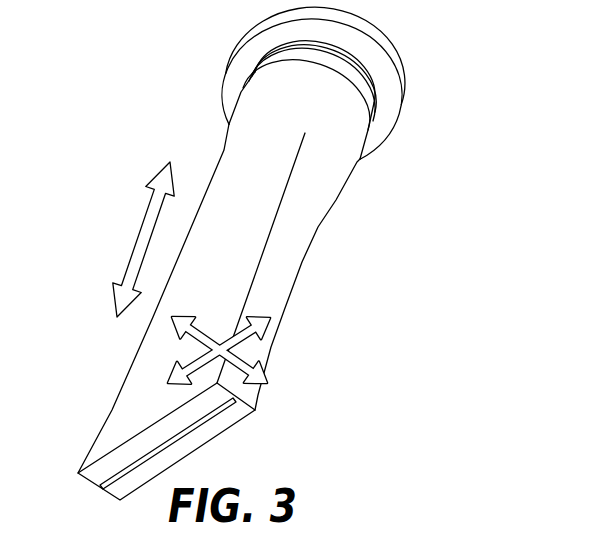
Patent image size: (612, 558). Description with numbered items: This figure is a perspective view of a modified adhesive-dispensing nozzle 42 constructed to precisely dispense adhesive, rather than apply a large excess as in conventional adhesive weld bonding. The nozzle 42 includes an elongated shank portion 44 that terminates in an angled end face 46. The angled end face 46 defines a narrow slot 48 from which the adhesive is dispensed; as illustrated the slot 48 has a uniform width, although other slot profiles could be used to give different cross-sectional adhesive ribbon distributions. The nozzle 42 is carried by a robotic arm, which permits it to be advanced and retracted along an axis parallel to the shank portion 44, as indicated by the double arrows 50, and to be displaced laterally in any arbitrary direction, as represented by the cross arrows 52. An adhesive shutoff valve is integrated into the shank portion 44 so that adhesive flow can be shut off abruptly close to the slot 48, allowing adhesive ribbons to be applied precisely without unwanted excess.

The nozzle 42 is at (412, 66).
The shank portion 44 is at (313, 217).
The angled end face 46 is at (212, 425).
The slot 48 is at (172, 437).
The double arrows 50 is at (143, 242).
The cross arrows 52 is at (247, 342).